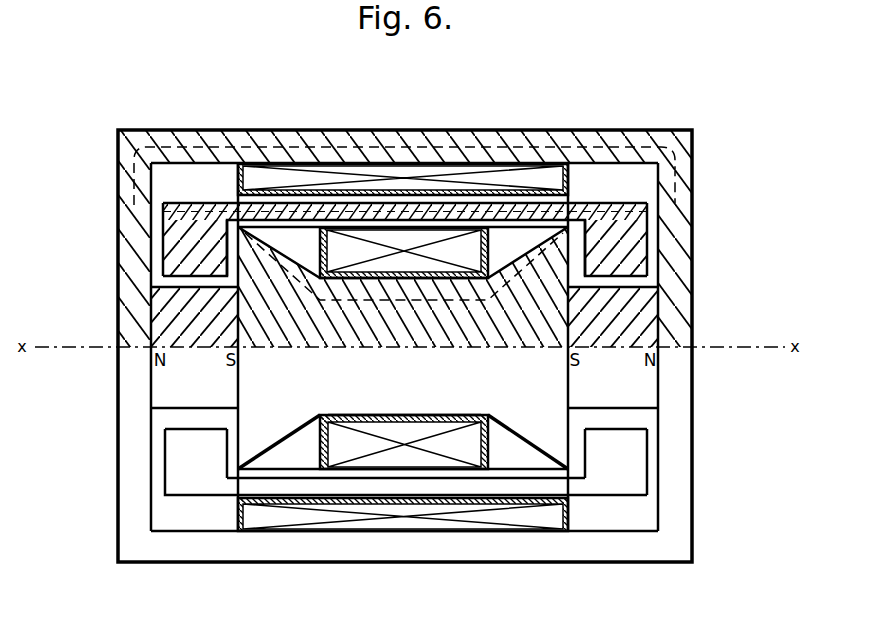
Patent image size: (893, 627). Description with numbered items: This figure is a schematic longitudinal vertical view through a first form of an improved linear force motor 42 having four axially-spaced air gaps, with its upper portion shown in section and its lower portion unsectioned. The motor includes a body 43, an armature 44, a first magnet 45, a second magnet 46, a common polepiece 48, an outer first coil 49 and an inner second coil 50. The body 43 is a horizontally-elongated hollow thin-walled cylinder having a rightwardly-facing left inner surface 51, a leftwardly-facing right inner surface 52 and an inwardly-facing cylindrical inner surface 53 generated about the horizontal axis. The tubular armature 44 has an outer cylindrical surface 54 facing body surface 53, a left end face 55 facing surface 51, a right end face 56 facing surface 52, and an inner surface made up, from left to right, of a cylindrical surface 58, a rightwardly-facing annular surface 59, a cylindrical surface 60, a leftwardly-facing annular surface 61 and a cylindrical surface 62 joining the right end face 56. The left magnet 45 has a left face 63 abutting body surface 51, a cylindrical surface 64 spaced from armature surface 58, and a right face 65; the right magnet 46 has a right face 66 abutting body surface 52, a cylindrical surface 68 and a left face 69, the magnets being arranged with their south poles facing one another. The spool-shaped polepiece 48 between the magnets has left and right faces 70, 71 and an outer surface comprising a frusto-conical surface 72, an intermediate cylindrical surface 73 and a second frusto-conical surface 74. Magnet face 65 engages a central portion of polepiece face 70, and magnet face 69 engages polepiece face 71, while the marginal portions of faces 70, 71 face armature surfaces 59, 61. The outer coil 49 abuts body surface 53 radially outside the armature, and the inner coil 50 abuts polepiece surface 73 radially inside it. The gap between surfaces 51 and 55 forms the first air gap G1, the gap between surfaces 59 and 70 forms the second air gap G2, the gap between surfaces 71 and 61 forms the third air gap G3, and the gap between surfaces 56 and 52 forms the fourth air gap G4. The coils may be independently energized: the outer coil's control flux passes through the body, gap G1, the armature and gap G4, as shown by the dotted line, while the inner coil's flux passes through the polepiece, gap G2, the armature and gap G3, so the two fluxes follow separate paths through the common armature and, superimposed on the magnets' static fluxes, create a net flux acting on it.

The linear force motor 42 is at (571, 113).
The body 43 is at (315, 551).
The armature 44 is at (299, 478).
The first magnet 45 is at (184, 372).
The second magnet 46 is at (602, 372).
The common polepiece 48 is at (394, 372).
The first coil 49 is at (422, 523).
The second coil 50 is at (420, 415).
The left inner surface 51 is at (152, 521).
The right inner surface 52 is at (657, 511).
The inner surface 53 is at (590, 523).
The outer cylindrical surface 54 is at (215, 498).
The left end face 55 is at (165, 473).
The right end face 56 is at (648, 473).
The inwardly-facing cylindrical surface 58 is at (178, 421).
The rightwardly-facing annular vertical surface 59 is at (226, 451).
The inwardly-facing cylindrical surface 60 is at (268, 476).
The leftwardly-facing annular vertical surface 61 is at (586, 451).
The inwardly-facing cylindrical surface 62 is at (640, 418).
The left face 63 is at (151, 375).
The outwardly-facing cylindrical surface 64 is at (206, 411).
The right face 65 is at (238, 368).
The right face 66 is at (663, 372).
The outwardly-facing cylindrical surface 68 is at (627, 411).
The left face 69 is at (568, 363).
The left face 70 is at (238, 389).
The right face 71 is at (571, 392).
The frusto-conical surface 72 is at (301, 428).
The intermediate cylindrical surface 73 is at (393, 422).
The frusto-conical surface 74 is at (512, 437).
The first active air gap G1 is at (150, 243).
The second active air gap G2 is at (231, 239).
The third air gap G3 is at (568, 235).
The fourth air gap G4 is at (659, 243).